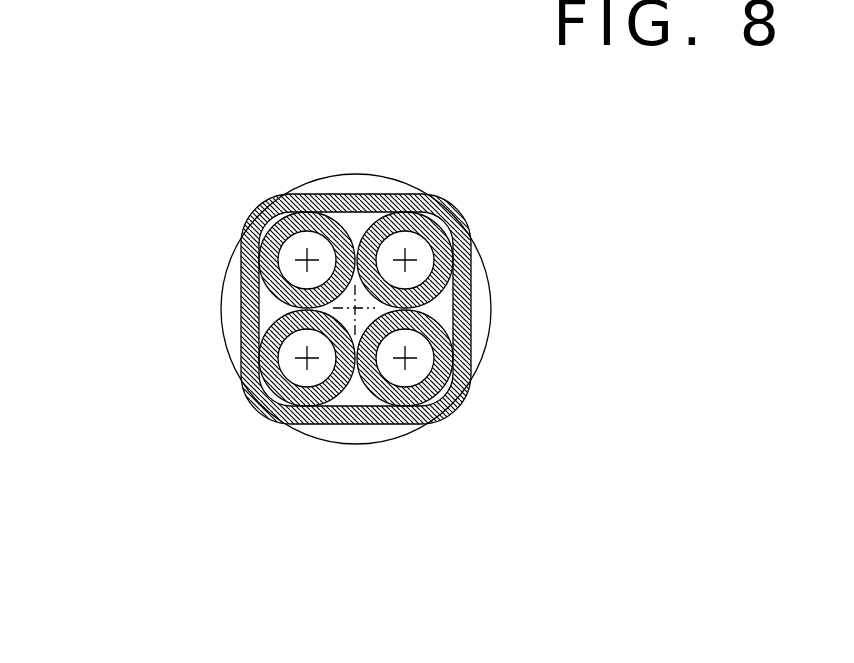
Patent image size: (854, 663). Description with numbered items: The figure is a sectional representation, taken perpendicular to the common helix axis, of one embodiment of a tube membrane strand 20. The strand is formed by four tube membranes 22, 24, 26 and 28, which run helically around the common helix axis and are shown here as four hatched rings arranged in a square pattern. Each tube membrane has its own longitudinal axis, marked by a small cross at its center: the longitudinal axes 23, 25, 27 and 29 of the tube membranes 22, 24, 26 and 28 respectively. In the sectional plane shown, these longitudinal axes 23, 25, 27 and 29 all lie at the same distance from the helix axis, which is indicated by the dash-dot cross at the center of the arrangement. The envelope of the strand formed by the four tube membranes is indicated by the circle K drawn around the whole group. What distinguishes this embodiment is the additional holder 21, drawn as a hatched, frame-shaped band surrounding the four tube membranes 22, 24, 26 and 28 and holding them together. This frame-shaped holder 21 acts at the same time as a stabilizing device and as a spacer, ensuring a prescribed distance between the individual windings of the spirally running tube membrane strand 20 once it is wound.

The cable 20 is at (420, 344).
The holder 21 is at (472, 312).
The tube membrane 22 is at (245, 385).
The longitudinal axis 23 is at (307, 358).
The tube membrane 24 is at (242, 243).
The longitudinal axis 25 is at (307, 252).
The tube membrane 26 is at (438, 198).
The longitudinal axis 27 is at (413, 258).
The tube membrane 28 is at (462, 403).
The longitudinal axis 29 is at (407, 360).
The circle K is at (317, 435).